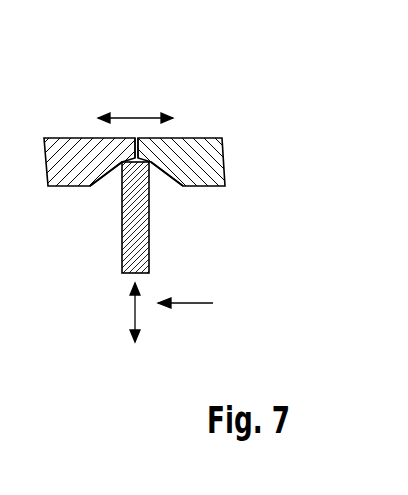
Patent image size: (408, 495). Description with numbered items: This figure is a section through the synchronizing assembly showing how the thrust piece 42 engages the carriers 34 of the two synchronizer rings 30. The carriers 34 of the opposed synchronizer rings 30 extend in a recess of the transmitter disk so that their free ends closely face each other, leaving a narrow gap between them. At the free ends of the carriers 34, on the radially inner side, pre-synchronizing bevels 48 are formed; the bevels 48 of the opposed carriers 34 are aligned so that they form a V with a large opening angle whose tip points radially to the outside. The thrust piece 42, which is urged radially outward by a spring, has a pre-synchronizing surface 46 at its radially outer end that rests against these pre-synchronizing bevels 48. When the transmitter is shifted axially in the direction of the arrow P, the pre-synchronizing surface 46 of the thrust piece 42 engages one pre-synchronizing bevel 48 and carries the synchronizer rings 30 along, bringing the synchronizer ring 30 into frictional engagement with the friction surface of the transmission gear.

The synchronizer ring 30 is at (214, 161).
The carrier 34 is at (162, 148).
The thrust piece 42 is at (122, 243).
The pre-synchronizing surface 46 is at (128, 153).
The pre-synchronizing bevel 48 is at (105, 179).
The arrow P is at (195, 305).